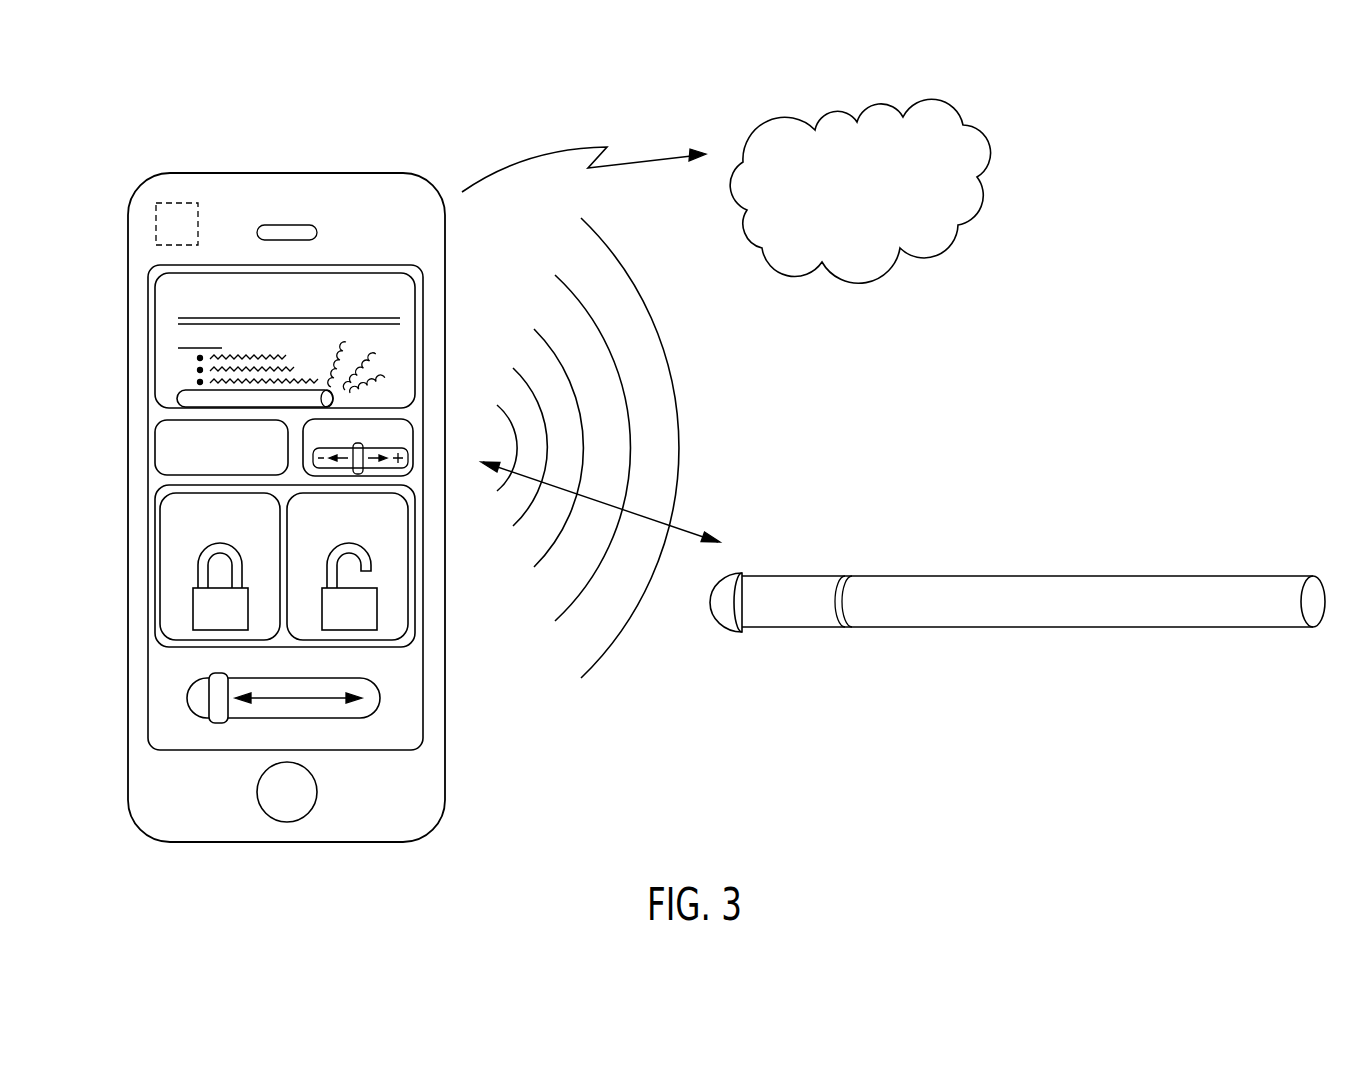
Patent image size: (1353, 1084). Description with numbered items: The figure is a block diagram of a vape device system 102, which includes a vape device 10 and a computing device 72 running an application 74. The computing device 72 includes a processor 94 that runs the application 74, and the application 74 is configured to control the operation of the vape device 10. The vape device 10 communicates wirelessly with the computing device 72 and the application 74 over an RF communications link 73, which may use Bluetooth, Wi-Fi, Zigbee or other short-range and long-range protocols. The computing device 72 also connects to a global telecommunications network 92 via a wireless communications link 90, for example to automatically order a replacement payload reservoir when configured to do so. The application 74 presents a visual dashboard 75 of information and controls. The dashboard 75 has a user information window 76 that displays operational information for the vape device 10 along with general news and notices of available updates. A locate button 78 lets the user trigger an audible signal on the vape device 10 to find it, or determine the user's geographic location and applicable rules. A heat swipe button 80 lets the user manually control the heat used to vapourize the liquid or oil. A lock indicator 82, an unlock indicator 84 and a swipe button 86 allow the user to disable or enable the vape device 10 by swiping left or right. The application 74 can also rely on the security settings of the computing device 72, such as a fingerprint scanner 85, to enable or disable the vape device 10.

The vape device 10 is at (1212, 552).
The computing device 72 is at (287, 173).
The RF communications link 73 is at (670, 362).
The application 74 is at (365, 272).
The dashboard 75 is at (417, 345).
The user information window 76 is at (160, 373).
The locate button 78 is at (160, 452).
The heat swipe button 80 is at (402, 442).
The lock indicator 82 is at (168, 560).
The unlock indicator 84 is at (402, 563).
The fingerprint scanner 85 is at (292, 803).
The swipe button 86 is at (367, 698).
The wireless communications link 90 is at (530, 162).
The global telecommunications network 92 is at (975, 143).
The processor 94 is at (188, 200).
The vape device system 102 is at (1098, 260).